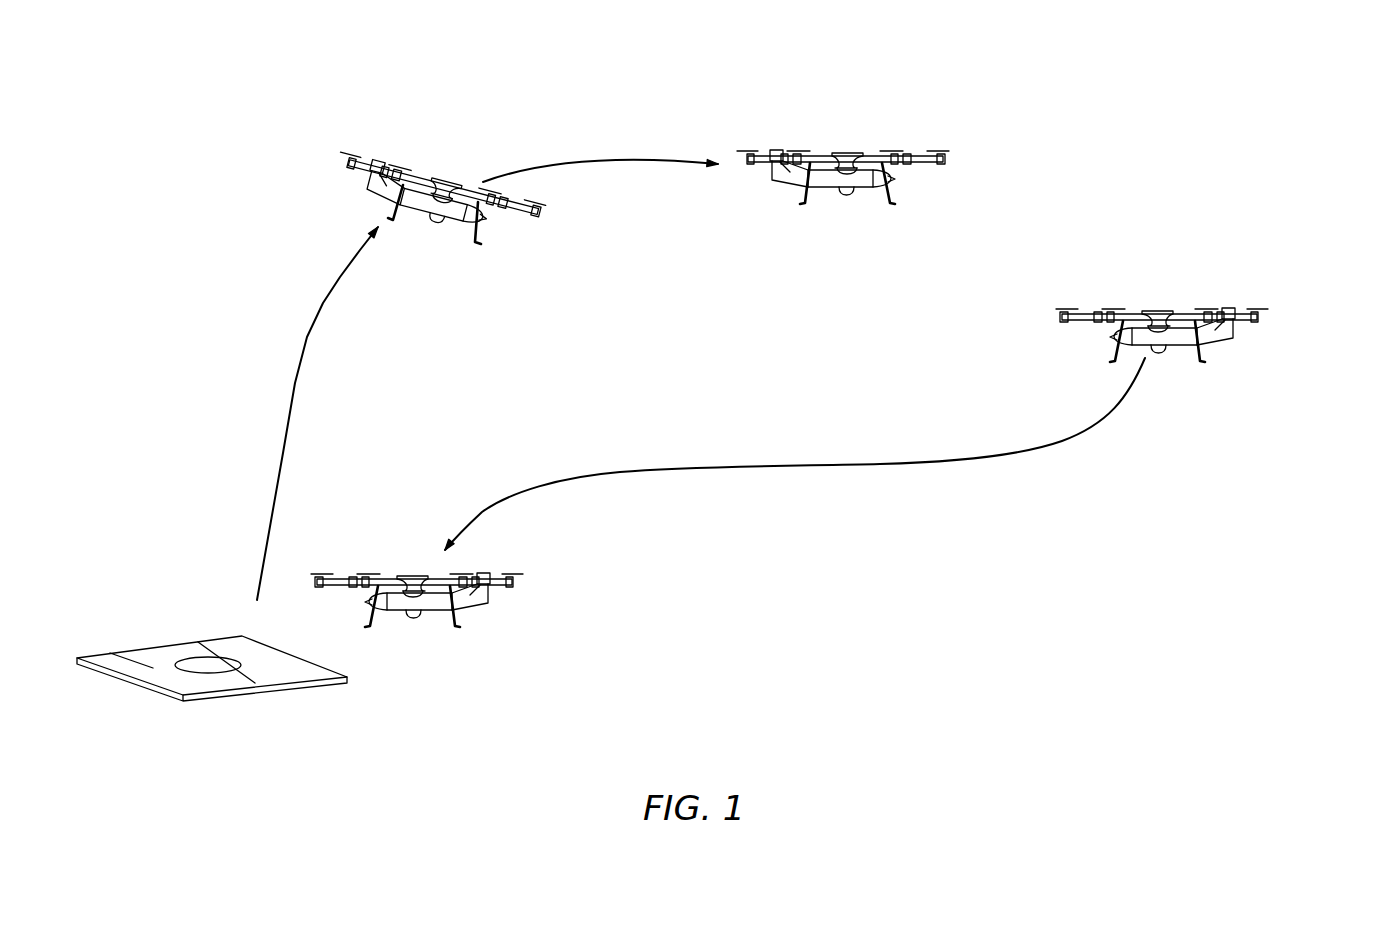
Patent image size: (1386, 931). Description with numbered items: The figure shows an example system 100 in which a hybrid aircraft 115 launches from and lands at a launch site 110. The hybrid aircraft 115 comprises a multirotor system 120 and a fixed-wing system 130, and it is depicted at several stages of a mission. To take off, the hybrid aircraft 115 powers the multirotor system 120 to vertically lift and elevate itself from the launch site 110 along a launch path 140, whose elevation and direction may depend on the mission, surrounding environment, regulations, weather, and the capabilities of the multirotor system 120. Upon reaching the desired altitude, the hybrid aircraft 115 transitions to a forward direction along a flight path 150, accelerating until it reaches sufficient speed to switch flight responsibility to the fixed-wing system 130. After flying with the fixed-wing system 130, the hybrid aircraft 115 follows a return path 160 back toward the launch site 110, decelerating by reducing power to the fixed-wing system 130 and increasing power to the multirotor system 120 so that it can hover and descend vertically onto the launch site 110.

The system 100 is at (1148, 115).
The launch site 110 is at (268, 685).
The hybrid aircraft 115 is at (804, 365).
The multirotor system 120 is at (418, 178).
The fixed-wing system 130 is at (450, 223).
The launch path 140 is at (295, 385).
The flight path 150 is at (613, 158).
The return path 160 is at (760, 462).